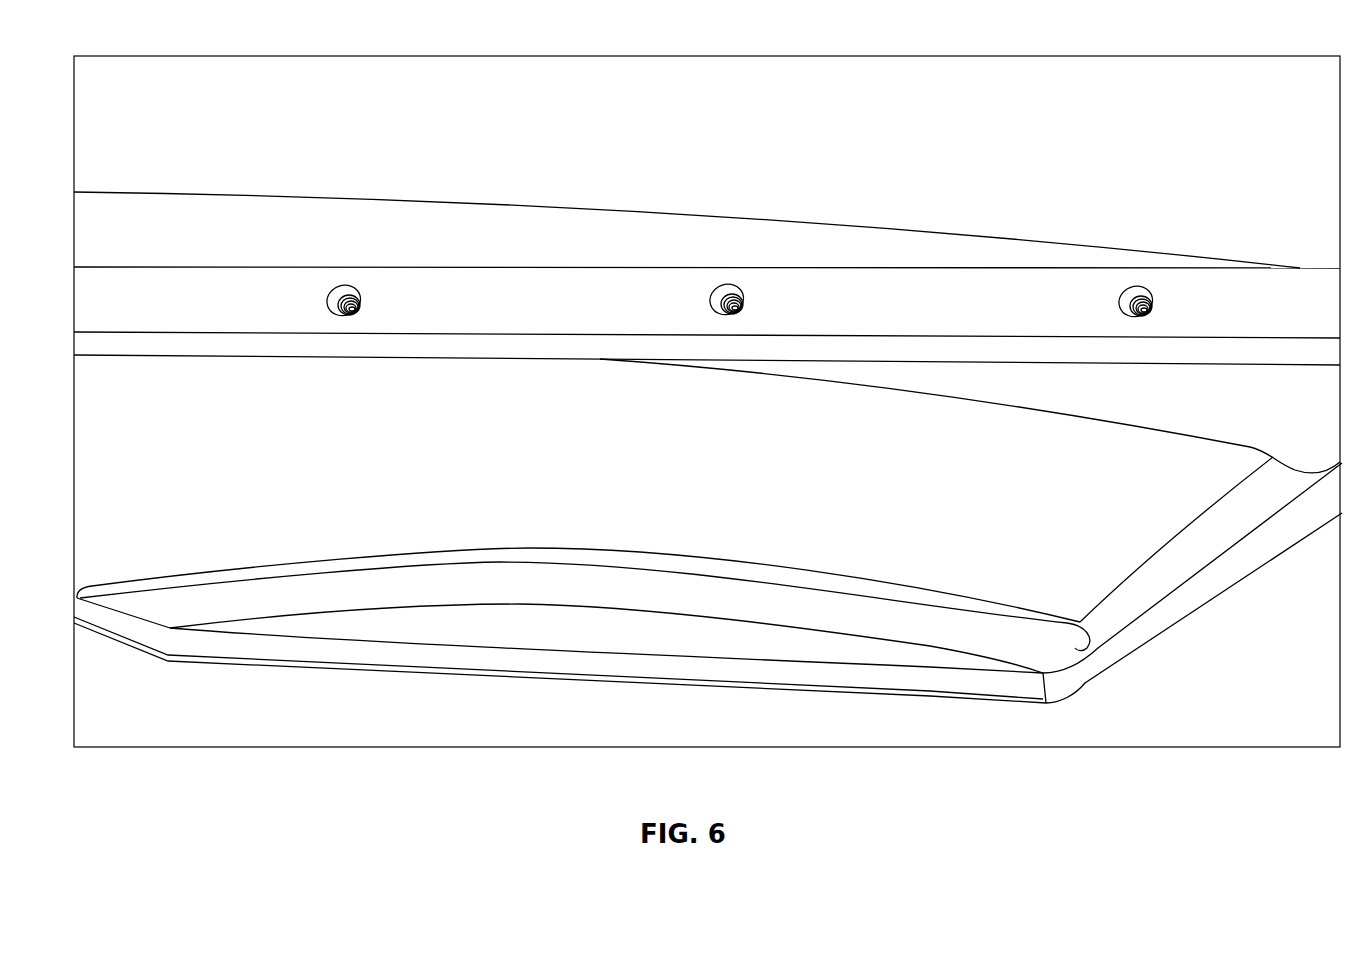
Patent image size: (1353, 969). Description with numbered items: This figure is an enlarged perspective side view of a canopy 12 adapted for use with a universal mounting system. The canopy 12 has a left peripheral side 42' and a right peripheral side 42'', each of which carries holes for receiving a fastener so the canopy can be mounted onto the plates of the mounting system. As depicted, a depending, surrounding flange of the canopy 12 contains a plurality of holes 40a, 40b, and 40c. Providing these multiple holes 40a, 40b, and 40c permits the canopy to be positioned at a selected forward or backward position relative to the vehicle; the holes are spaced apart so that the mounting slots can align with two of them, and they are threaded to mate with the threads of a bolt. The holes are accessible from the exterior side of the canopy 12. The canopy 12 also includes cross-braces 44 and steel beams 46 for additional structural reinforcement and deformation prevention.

The canopy 12 is at (190, 205).
The hole 40a is at (358, 288).
The hole 40b is at (742, 288).
The hole 40c is at (1147, 288).
The left peripheral side 42' is at (707, 215).
The right peripheral side 42'' is at (560, 669).
The cross-brace 44 is at (550, 556).
The steel beam 46 is at (766, 666).